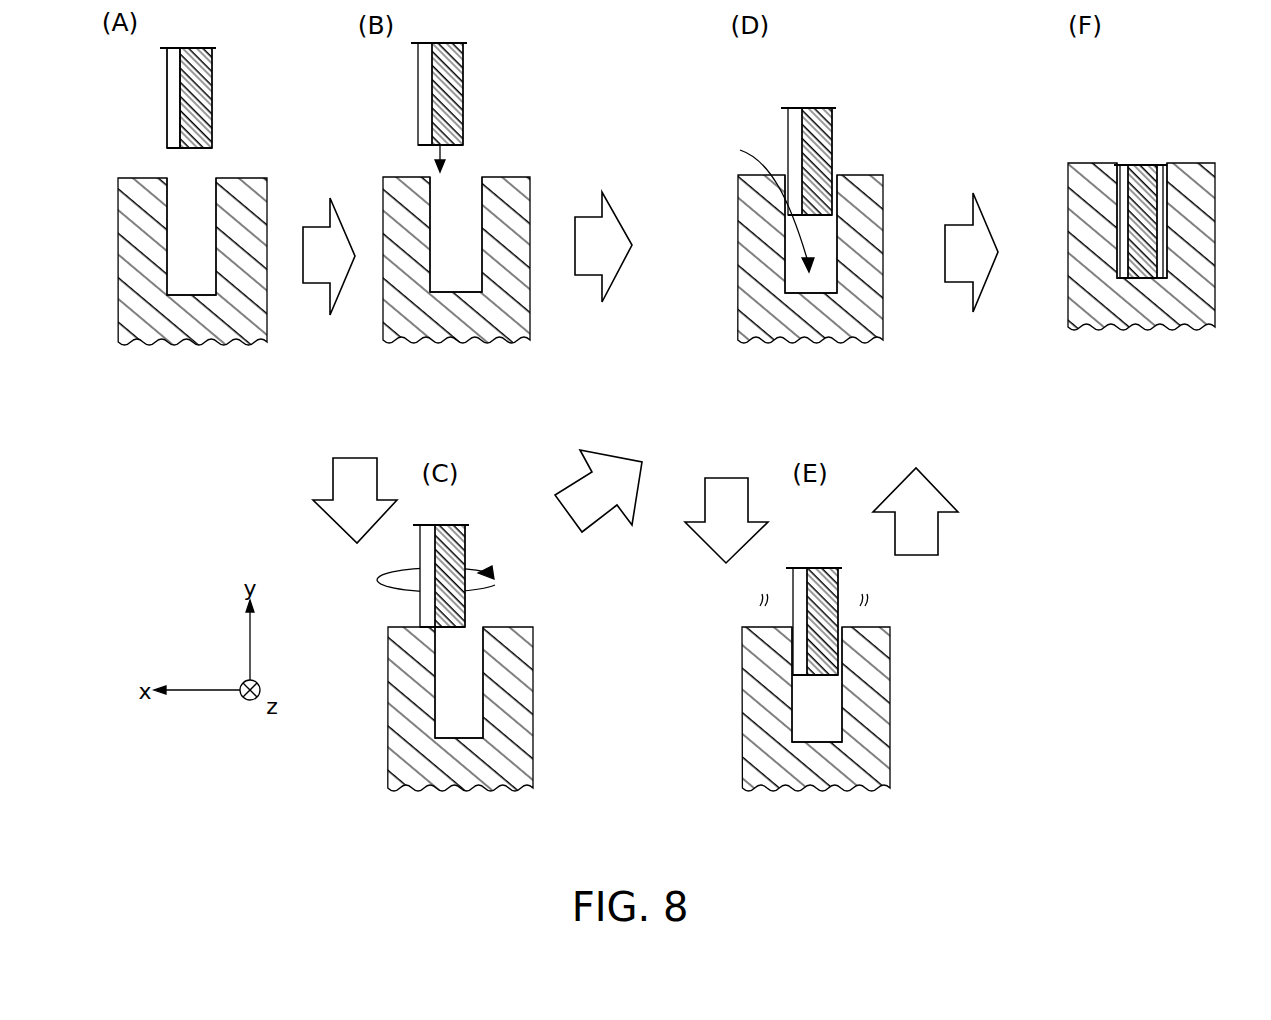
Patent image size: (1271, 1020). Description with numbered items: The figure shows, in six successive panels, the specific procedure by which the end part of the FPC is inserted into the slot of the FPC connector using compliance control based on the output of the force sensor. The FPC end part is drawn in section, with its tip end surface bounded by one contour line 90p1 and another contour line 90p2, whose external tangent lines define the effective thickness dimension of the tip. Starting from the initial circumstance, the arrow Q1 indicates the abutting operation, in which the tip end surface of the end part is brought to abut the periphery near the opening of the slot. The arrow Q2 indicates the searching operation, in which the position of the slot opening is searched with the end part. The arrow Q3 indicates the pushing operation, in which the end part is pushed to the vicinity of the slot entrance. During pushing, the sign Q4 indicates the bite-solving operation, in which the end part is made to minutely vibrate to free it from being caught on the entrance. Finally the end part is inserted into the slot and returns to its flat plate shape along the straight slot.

The contour line 90p1 is at (166, 82).
The contour line 90p2 is at (213, 88).
The arrow Q1 is at (432, 128).
The arrow Q2 is at (495, 585).
The arrow Q3 is at (757, 202).
The sign Q4 is at (757, 604).